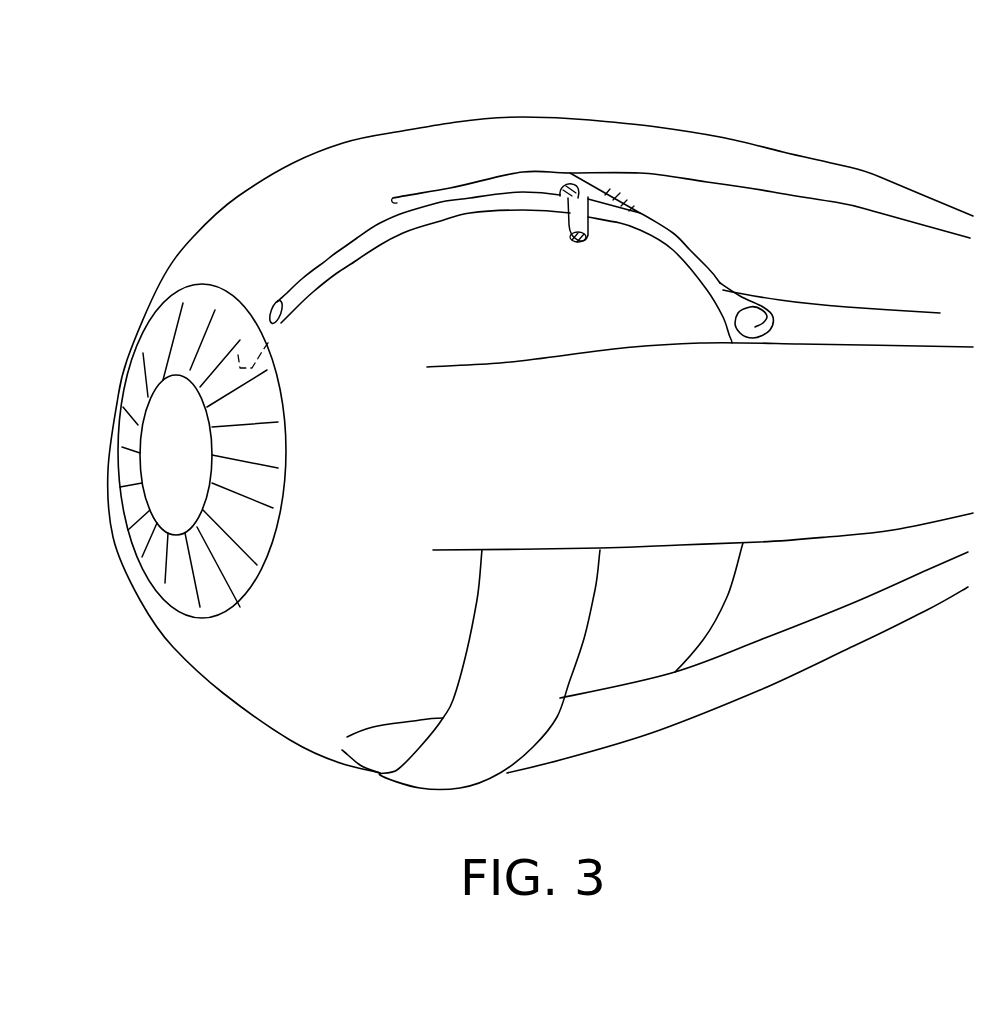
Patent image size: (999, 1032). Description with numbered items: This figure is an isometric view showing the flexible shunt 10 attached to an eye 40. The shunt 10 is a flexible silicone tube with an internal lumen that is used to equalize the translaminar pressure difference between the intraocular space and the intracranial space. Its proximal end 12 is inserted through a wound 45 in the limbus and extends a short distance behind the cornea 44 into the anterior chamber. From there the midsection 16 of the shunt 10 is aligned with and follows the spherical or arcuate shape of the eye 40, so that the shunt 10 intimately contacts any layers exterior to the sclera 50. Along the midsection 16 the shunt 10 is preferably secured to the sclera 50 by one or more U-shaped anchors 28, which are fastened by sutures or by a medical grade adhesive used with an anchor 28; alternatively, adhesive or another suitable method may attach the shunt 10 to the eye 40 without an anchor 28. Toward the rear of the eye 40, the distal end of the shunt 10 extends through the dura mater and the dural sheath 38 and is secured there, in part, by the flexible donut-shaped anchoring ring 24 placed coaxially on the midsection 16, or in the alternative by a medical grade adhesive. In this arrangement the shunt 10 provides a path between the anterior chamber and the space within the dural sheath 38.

The shunt 10 is at (378, 208).
The proximal end 12 is at (177, 279).
The midsection 16 is at (681, 150).
The anchoring ring 24 is at (796, 230).
The U-shaped anchor 28 is at (651, 202).
The dural sheath 38 is at (841, 226).
The eye 40 is at (270, 162).
The cornea 44 is at (175, 446).
The wound 45 is at (277, 302).
The sclera 50 is at (538, 222).